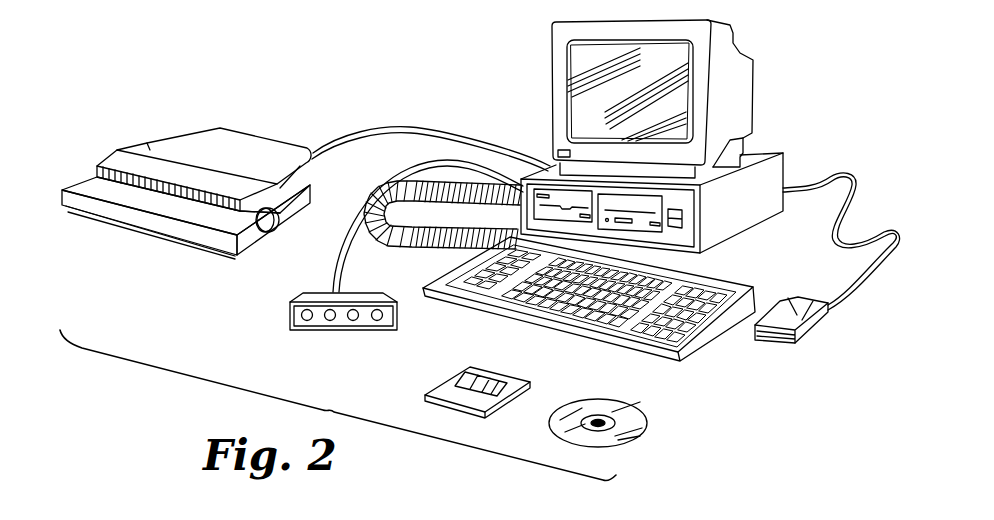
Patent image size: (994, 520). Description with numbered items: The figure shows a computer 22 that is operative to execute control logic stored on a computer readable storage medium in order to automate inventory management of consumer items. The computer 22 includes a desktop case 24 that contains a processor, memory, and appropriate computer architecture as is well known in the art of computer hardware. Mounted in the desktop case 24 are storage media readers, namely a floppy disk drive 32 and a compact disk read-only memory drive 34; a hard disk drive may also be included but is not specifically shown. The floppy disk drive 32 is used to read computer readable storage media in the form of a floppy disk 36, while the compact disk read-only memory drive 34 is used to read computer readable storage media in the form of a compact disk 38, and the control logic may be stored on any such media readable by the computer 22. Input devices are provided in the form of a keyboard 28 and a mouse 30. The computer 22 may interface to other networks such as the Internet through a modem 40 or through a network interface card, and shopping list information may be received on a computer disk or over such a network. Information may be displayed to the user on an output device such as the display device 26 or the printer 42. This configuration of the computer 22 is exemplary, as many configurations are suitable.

The computer 22 is at (409, 65).
The desktop case 24 is at (780, 168).
The display device 26 is at (742, 75).
The keyboard 28 is at (697, 352).
The mouse 30 is at (793, 343).
The floppy disk drive 32 is at (565, 203).
The compact disk read-only memory drive 34 is at (627, 208).
The floppy disk 36 is at (450, 382).
The compact disk 38 is at (633, 442).
The modem 40 is at (289, 318).
The printer 42 is at (117, 153).